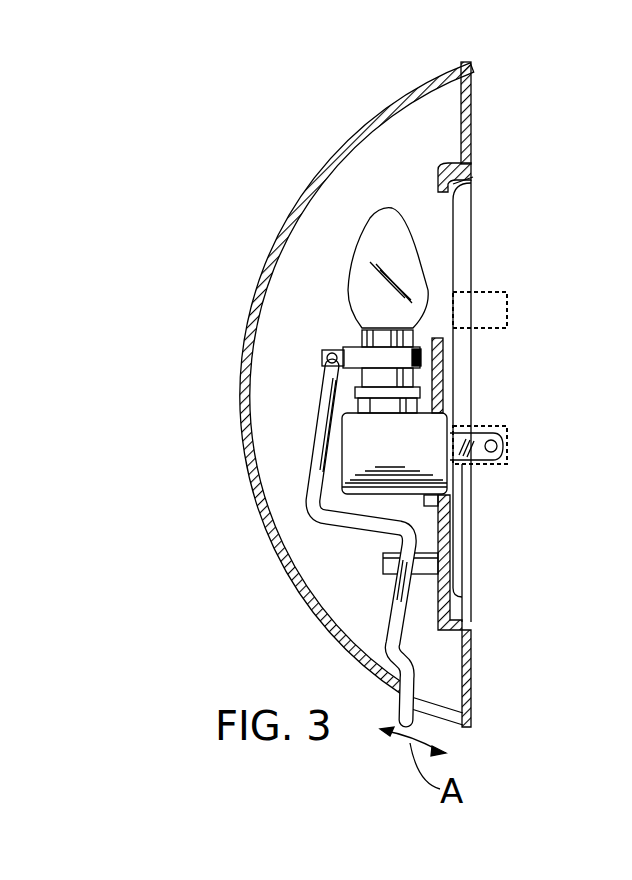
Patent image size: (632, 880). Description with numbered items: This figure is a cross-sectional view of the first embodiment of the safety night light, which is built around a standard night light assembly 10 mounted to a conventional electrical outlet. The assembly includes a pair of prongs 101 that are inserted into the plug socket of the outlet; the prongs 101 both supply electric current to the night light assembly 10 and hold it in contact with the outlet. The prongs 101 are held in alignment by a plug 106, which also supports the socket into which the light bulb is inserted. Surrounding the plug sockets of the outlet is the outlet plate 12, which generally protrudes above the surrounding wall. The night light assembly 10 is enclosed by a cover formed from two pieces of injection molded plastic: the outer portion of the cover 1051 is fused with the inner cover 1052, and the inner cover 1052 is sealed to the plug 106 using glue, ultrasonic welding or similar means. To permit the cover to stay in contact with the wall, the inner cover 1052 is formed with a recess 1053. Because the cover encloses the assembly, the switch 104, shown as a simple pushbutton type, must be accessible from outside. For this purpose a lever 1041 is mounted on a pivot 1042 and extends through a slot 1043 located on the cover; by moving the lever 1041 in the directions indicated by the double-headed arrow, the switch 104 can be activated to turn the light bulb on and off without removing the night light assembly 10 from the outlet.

The night light assembly 10 is at (307, 414).
The outlet plate 12 is at (467, 255).
The prongs 101 is at (487, 427).
The switch 104 is at (320, 524).
The lever 1041 is at (318, 440).
The pivot 1042 is at (318, 348).
The slot 1043 is at (436, 710).
The outer portion of cover 1051 is at (300, 234).
The inner cover 1052 is at (463, 172).
The recess 1053 is at (463, 187).
The plug 106 is at (449, 483).